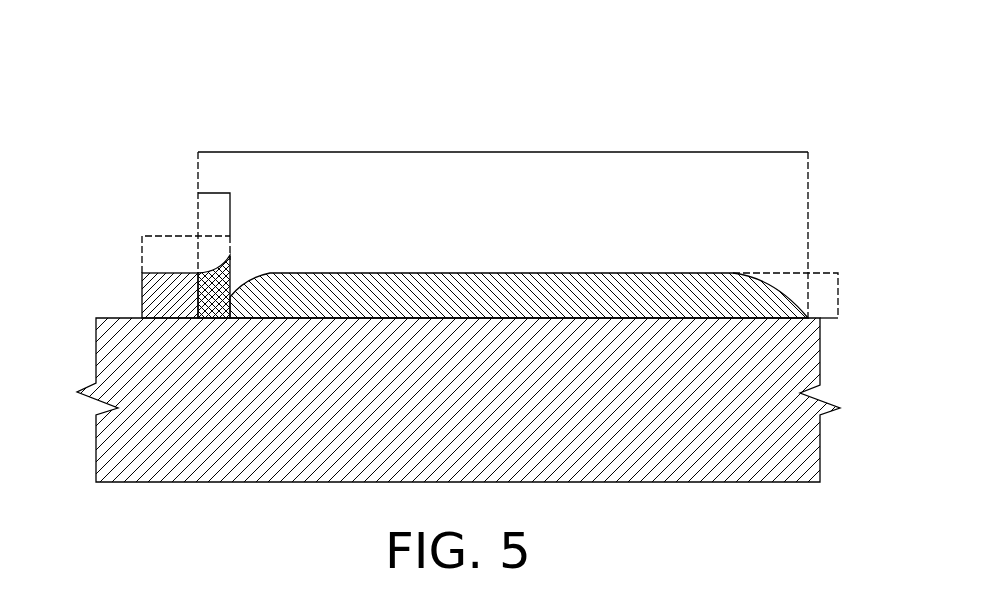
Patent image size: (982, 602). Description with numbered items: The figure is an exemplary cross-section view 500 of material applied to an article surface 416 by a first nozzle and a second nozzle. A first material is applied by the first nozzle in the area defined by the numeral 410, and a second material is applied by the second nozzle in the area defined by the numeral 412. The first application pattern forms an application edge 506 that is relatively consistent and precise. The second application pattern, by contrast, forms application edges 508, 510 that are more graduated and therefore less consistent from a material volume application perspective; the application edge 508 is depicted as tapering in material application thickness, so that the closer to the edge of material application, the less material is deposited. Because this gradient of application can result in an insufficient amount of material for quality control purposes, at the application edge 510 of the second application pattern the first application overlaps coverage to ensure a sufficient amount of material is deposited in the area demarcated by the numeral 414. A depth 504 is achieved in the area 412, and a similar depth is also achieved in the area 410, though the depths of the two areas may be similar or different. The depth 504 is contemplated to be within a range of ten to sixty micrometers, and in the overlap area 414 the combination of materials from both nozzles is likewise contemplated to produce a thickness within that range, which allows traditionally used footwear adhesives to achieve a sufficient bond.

The cross-section view 500 is at (793, 103).
The article surface 416 is at (107, 316).
The area of second material application 412 is at (505, 152).
The overlap area 414 is at (213, 193).
The area of first material application 410 is at (182, 235).
The application edge of first application pattern 506 is at (140, 297).
The application edge of second application pattern 510 is at (252, 272).
The application edge of second application pattern 508 is at (768, 287).
The depth 504 is at (838, 293).